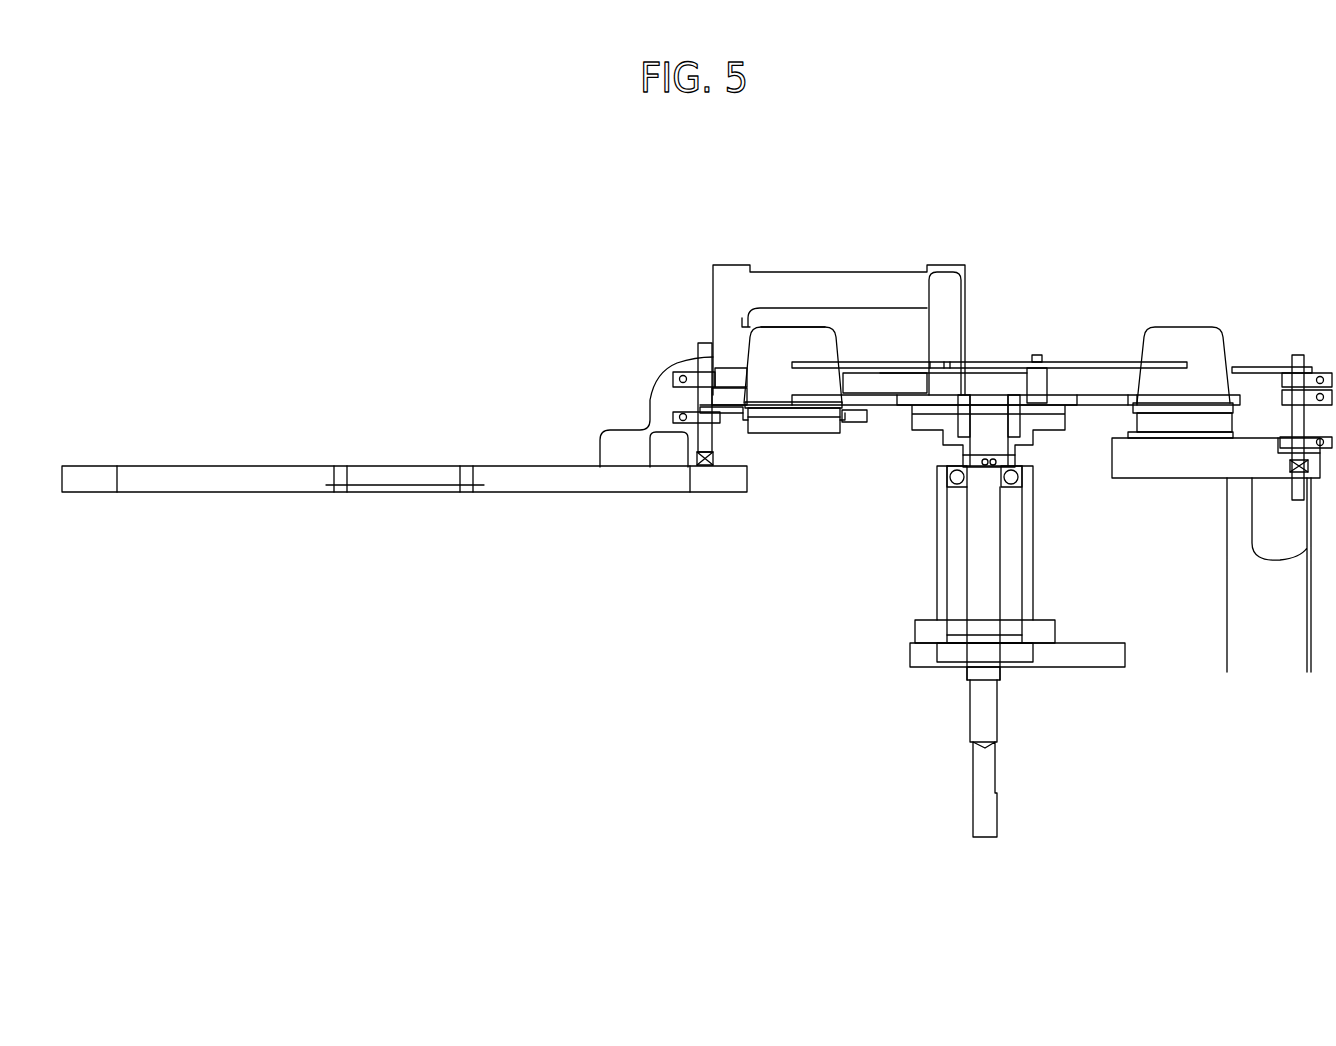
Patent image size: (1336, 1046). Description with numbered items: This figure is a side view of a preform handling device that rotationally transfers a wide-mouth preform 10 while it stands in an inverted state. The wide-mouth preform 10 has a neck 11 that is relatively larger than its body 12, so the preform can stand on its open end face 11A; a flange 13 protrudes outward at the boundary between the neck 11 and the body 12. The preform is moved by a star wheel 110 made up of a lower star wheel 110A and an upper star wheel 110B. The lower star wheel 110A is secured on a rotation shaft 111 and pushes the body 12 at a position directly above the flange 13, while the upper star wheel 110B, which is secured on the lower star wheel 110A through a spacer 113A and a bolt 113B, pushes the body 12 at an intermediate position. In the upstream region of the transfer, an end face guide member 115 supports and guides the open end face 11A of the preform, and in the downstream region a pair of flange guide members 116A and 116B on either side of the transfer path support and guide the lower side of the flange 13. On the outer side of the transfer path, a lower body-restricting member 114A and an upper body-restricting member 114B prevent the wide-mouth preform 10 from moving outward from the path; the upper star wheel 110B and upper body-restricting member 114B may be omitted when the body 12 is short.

The wide-mouth preform 10 is at (782, 327).
The neck 11 is at (768, 427).
The open end face 11A is at (817, 435).
The body 12 is at (793, 315).
The flange 13 is at (775, 397).
The star wheel 110 is at (950, 183).
The lower star wheel 110A is at (813, 395).
The upper star wheel 110B is at (807, 362).
The rotation shaft 111 is at (977, 552).
The spacer 113A is at (1025, 375).
The bolt 113B is at (1037, 356).
The lower body-restricting member 114A is at (698, 398).
The upper body-restricting member 114B is at (710, 352).
The end face guide member 115 is at (1132, 425).
The flange guide member 116A is at (735, 413).
The flange guide member 116B is at (857, 427).